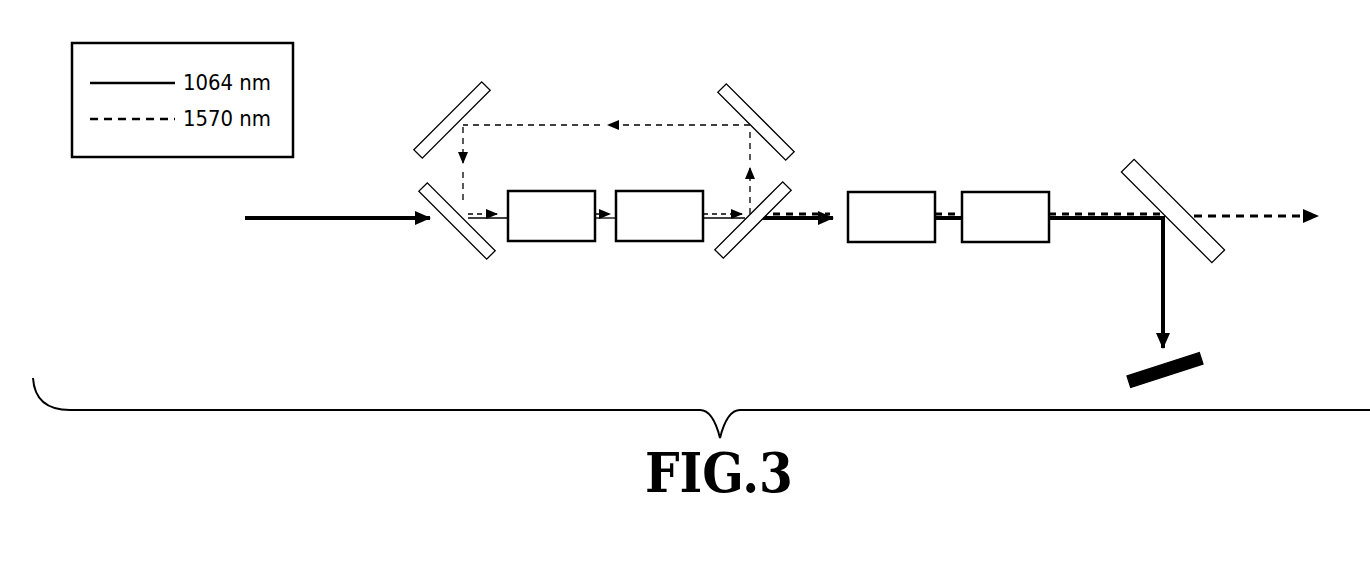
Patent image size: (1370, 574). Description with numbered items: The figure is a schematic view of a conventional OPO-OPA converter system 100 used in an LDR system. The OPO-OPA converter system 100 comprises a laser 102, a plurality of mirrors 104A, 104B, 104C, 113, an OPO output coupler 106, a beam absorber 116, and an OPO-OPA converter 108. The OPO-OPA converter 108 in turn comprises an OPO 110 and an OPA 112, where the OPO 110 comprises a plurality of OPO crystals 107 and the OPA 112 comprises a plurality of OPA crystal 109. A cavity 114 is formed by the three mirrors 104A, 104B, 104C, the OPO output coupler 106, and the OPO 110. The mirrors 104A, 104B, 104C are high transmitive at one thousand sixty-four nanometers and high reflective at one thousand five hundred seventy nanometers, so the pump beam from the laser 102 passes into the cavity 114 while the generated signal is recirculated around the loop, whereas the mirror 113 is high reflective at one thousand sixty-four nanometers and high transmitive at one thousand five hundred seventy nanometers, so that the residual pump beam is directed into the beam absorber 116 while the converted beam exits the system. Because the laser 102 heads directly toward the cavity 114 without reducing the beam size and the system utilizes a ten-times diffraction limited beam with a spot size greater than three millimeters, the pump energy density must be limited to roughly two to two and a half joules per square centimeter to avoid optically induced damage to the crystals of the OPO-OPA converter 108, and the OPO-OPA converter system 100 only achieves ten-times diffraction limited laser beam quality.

The OPO-OPA converter system 100 is at (950, 102).
The laser 102 is at (318, 223).
The mirror 104A is at (462, 244).
The mirror 104B is at (758, 113).
The mirror 104C is at (455, 118).
The OPO output coupler 106 is at (747, 240).
The OPO crystals 107 is at (577, 229).
The OPO-OPA converter 108 is at (831, 238).
The OPA crystal 109 is at (917, 230).
The OPO 110 is at (560, 262).
The OPA 112 is at (984, 170).
The mirror 113 is at (1164, 181).
The cavity 114 is at (543, 85).
The beam absorber 116 is at (1140, 367).